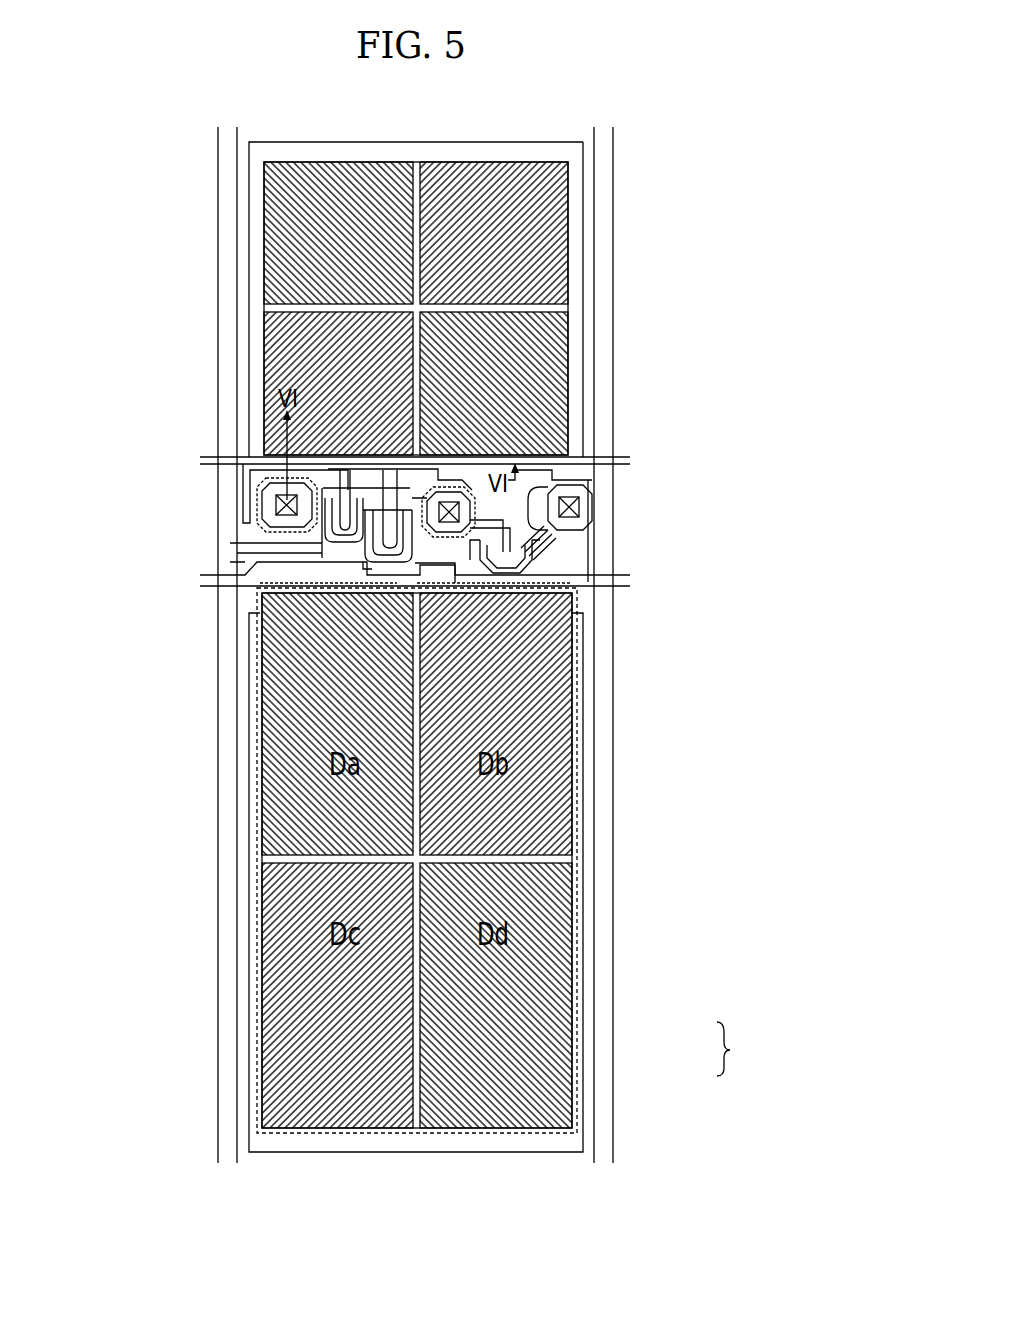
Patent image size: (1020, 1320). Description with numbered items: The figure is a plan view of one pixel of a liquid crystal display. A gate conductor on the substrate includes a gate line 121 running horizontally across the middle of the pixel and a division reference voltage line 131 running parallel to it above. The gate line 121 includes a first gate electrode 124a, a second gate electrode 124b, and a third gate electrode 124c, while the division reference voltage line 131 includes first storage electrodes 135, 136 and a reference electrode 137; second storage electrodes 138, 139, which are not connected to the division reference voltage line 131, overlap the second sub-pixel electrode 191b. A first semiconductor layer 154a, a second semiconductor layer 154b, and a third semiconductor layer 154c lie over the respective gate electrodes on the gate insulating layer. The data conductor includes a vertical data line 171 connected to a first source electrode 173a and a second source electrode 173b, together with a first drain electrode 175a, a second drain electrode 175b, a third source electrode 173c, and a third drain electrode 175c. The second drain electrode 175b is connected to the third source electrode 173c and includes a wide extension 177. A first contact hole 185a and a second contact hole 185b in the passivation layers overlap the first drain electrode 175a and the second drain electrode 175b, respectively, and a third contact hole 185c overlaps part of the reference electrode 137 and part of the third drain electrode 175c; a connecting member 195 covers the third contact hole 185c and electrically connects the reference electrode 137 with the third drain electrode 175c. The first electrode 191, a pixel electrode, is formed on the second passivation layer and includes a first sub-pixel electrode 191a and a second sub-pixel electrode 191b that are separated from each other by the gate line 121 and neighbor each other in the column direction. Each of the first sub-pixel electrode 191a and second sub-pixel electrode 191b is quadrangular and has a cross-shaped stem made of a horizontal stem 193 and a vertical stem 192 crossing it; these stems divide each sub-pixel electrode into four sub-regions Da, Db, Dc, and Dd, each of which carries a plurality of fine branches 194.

The gate line 121 is at (218, 576).
The first gate electrode 124a is at (305, 470).
The second gate electrode 124b is at (385, 478).
The third gate electrode 124c is at (585, 565).
The division reference voltage line 131 is at (590, 456).
The first storage electrode 135 is at (584, 268).
The first storage electrode 136 is at (487, 142).
The reference electrode 137 is at (590, 488).
The second storage electrode 138 is at (583, 945).
The second storage electrode 139 is at (520, 1153).
The first semiconductor layer 154a is at (340, 500).
The second semiconductor layer 154b is at (395, 505).
The third semiconductor layer 154c is at (530, 580).
The data line 171 is at (237, 189).
The first source electrode 173a is at (280, 530).
The second source electrode 173b is at (375, 552).
The third source electrode 173c is at (560, 530).
The first drain electrode 175a is at (258, 482).
The second drain electrode 175b is at (355, 562).
The third drain electrode 175c is at (560, 575).
The extension 177 is at (465, 480).
The first contact hole 185a is at (260, 505).
The second contact hole 185b is at (455, 490).
The third contact hole 185c is at (594, 508).
The first electrode 191 is at (742, 1049).
The first sub-pixel electrode 191a is at (262, 241).
The second sub-pixel electrode 191b is at (260, 771).
The vertical stem 192 is at (416, 200).
The horizontal stem 193 is at (535, 310).
The fine branches 194 is at (536, 226).
The connecting member 195 is at (560, 515).